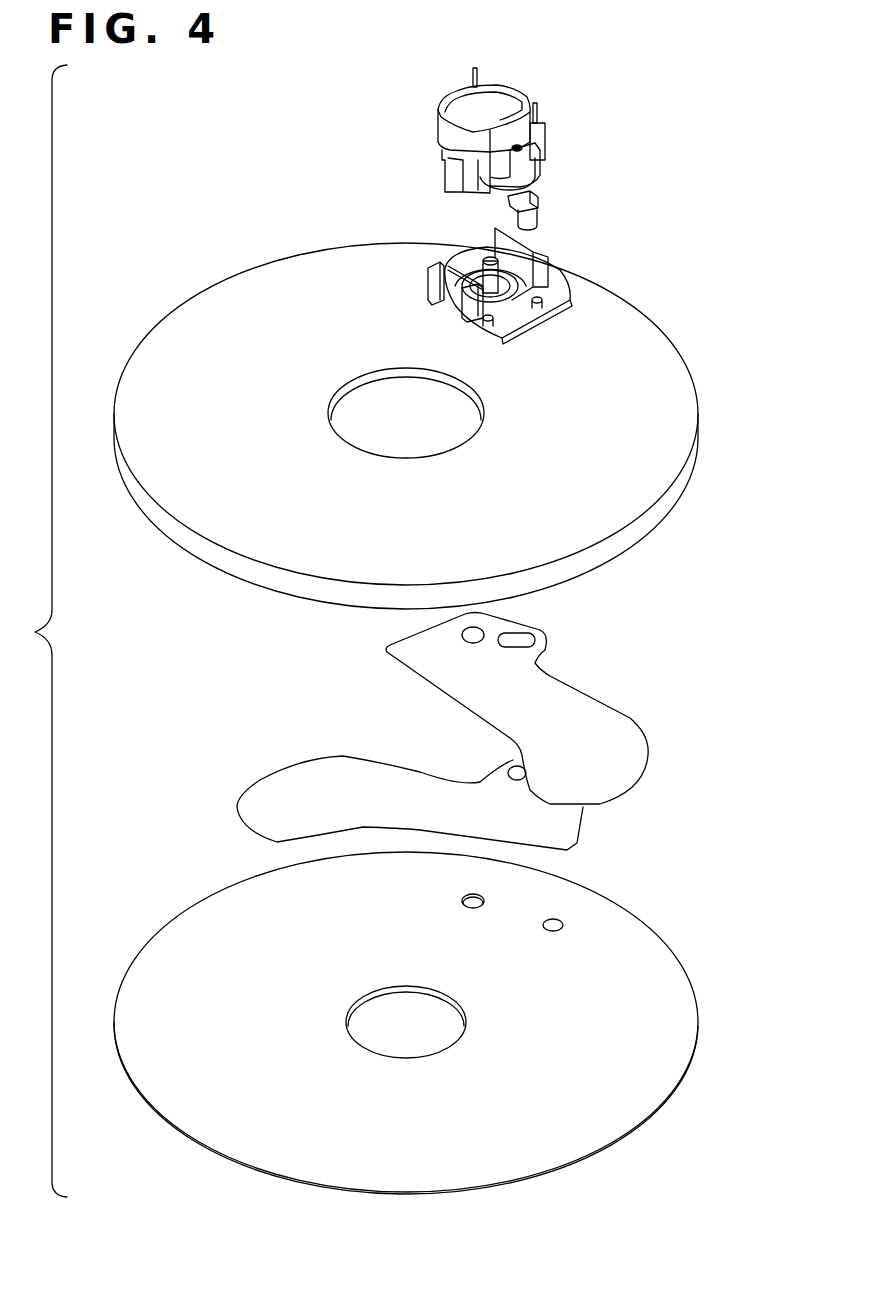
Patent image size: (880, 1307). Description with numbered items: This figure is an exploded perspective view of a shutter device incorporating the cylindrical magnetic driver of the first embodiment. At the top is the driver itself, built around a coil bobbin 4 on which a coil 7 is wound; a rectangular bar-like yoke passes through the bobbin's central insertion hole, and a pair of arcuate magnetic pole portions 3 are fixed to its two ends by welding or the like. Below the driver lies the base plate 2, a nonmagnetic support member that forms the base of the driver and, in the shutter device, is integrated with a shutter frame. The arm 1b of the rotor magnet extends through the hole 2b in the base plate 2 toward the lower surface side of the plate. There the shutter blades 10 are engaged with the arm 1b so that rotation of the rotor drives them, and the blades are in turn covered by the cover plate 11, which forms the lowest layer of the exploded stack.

The base plate 2 is at (297, 273).
The hole 2b is at (563, 318).
The arm 1b is at (531, 220).
The coil 7 is at (493, 108).
The coil bobbin 4 is at (542, 142).
The arcuate magnetic pole portions 3 is at (533, 168).
The shutter blades 10 is at (563, 832).
The cover plate 11 is at (636, 957).